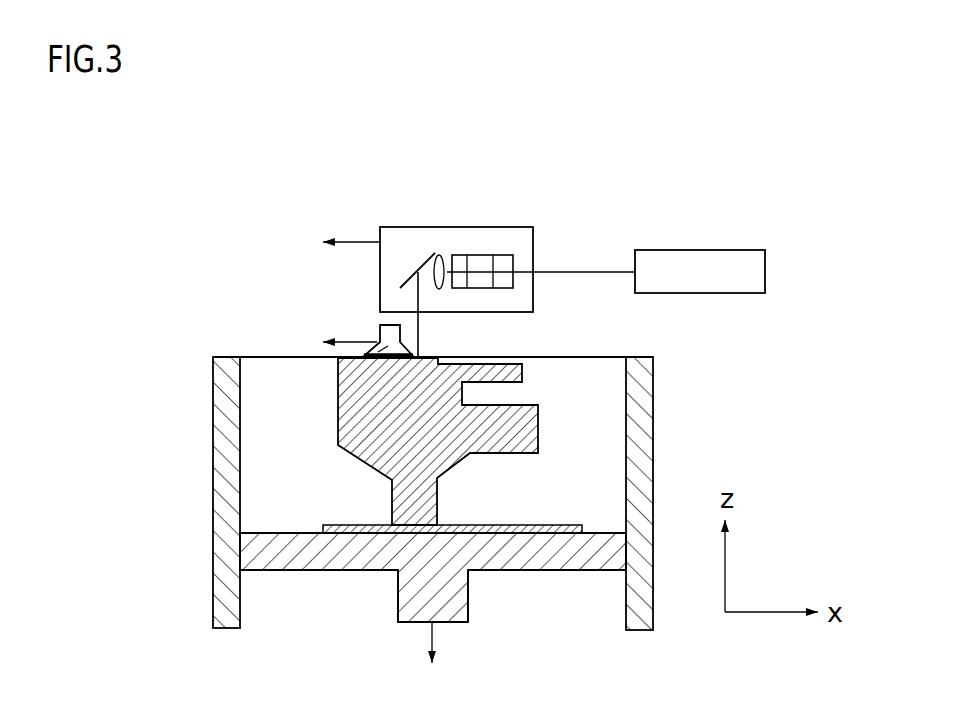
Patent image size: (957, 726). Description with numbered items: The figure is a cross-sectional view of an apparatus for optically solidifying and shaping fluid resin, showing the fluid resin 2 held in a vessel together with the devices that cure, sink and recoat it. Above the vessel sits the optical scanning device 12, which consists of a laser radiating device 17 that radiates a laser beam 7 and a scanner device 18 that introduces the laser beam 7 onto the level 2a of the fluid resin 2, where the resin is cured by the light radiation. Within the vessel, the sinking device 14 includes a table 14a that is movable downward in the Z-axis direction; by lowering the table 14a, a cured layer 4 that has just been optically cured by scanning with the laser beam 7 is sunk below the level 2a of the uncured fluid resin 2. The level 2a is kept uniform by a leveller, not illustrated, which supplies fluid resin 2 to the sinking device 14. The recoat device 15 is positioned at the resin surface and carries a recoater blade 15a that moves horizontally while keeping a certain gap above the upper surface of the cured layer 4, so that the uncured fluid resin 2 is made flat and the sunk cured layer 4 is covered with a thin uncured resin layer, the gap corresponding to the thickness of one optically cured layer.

The fluid resin 2 is at (595, 477).
The level of the fluid resin 2a is at (287, 357).
The cured layer 4 is at (373, 410).
The laser beam 7 is at (587, 272).
The optical scanning device 12 is at (345, 212).
The sinking device 14 is at (332, 593).
The table 14a is at (488, 555).
The recoat device 15 is at (360, 332).
The recoater blade 15a is at (340, 367).
The laser radiating device 17 is at (695, 248).
The scanner device 18 is at (430, 225).